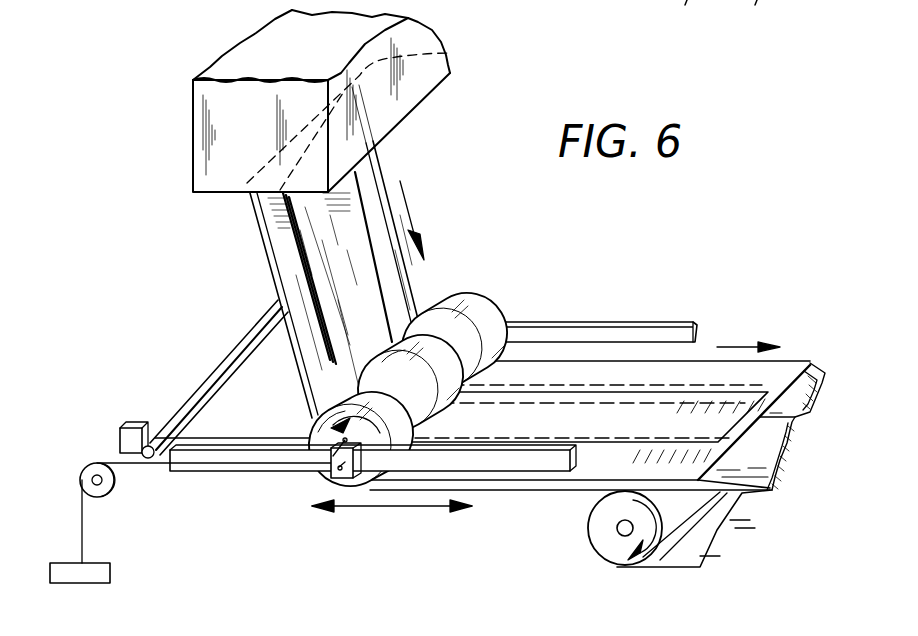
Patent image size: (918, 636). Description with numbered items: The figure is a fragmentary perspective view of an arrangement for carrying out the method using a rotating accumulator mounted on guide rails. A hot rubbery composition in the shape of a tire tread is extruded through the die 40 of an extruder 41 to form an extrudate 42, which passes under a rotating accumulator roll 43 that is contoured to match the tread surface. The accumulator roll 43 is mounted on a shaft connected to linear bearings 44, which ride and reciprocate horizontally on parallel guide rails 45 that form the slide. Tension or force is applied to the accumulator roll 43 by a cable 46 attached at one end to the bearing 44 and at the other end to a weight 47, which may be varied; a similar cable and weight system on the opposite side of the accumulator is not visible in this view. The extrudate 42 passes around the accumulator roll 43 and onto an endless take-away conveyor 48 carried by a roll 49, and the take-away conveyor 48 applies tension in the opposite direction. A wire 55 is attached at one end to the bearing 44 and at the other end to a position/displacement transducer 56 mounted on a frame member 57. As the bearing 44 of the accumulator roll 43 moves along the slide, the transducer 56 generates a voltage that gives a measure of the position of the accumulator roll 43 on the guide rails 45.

The die 40 is at (452, 53).
The extruder 41 is at (418, 107).
The extrudate 42 is at (268, 245).
The accumulator roll 43 is at (480, 293).
The linear bearings 44 is at (340, 472).
The guide rails 45 is at (625, 323).
The cable 46 is at (155, 464).
The weight 47 is at (100, 565).
The take-away conveyor 48 is at (588, 518).
The roll 49 is at (617, 530).
The wire 55 is at (226, 445).
The position/displacement transducer 56 is at (133, 423).
The frame member 57 is at (222, 380).